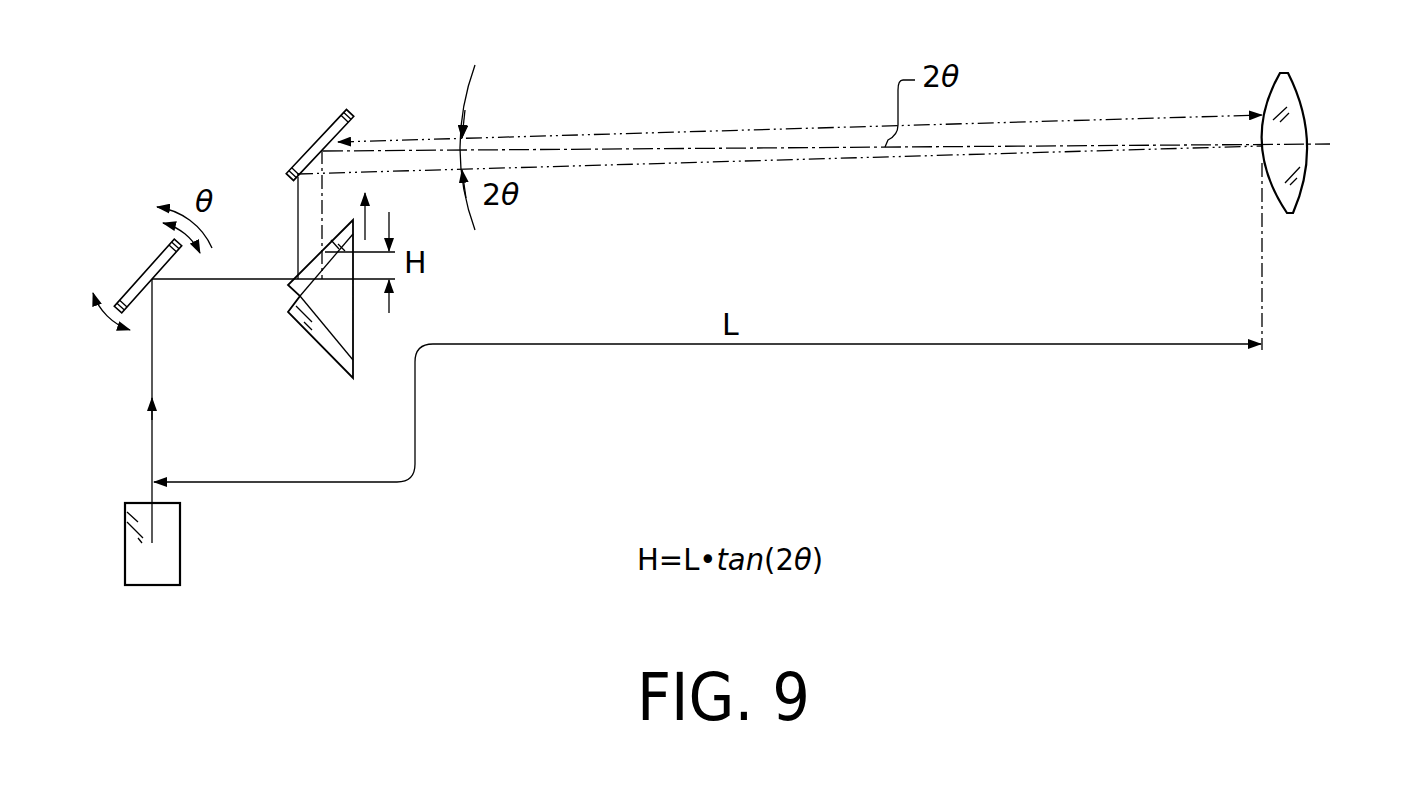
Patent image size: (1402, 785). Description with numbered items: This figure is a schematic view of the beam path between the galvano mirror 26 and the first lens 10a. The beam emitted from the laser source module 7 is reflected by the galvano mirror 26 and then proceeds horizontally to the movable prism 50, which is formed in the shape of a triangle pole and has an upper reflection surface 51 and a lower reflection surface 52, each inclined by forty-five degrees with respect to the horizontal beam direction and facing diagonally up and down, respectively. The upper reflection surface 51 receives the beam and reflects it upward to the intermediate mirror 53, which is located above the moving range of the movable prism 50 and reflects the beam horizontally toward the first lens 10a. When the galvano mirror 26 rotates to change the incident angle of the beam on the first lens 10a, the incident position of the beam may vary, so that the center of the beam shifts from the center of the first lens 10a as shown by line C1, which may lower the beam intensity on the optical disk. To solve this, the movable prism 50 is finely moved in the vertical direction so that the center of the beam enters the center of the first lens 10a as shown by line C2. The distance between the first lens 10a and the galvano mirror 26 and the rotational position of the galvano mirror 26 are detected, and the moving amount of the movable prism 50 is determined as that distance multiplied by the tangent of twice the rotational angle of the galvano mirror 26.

The laser source module 7 is at (170, 561).
The galvano mirror 26 is at (152, 267).
The intermediate mirror 53 is at (327, 136).
The movable prism 50 is at (353, 311).
The upper reflection surface 51 is at (312, 262).
The lower reflection surface 52 is at (320, 347).
The first lens 10a is at (1307, 110).
The line C1 is at (1098, 118).
The line C2 is at (673, 163).